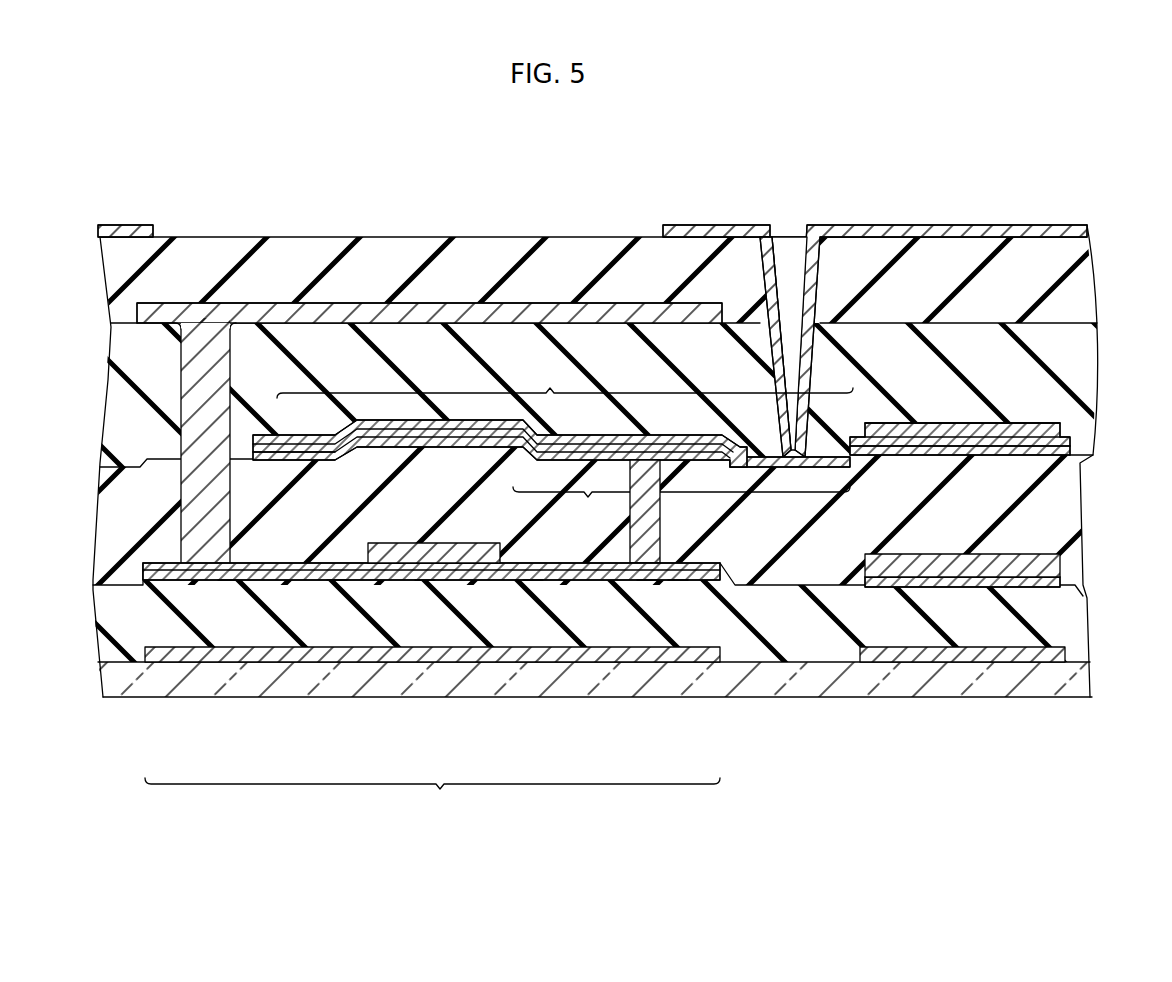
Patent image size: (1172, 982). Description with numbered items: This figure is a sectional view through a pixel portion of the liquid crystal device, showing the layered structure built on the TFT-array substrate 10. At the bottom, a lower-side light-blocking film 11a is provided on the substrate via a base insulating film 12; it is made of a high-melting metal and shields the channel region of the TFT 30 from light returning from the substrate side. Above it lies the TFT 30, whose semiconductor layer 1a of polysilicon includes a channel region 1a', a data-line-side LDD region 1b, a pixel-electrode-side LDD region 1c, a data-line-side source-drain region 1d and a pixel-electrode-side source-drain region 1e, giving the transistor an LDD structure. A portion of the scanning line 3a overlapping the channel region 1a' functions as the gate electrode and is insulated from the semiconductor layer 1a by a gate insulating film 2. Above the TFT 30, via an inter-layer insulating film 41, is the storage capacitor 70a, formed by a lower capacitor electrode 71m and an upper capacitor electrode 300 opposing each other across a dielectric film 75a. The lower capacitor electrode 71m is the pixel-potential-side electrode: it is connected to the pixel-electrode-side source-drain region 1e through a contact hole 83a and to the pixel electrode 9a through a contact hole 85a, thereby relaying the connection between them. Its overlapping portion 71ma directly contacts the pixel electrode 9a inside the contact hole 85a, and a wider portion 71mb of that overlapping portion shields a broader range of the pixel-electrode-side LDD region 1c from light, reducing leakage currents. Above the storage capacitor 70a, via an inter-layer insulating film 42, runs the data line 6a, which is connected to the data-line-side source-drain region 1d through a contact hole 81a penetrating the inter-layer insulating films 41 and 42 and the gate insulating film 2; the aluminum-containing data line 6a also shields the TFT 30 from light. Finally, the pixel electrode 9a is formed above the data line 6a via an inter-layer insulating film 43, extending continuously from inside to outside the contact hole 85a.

The pixel electrode 9a is at (138, 226).
The data line 6a is at (372, 312).
The contact hole 85a is at (800, 255).
The inter-layer insulating film 43 is at (1083, 278).
The inter-layer insulating film 42 is at (1083, 378).
The inter-layer insulating film 41 is at (1078, 510).
The base insulating film 12 is at (1075, 622).
The TFT-array substrate 10 is at (1075, 690).
The contact hole 81a is at (192, 396).
The overlapping portion 71ma is at (565, 378).
The storage capacitor 70a is at (694, 478).
The upper capacitor electrode 300 is at (920, 428).
The dielectric film 75a is at (265, 462).
The lower capacitor electrode 71m is at (928, 447).
The wider portion 71mb is at (681, 510).
The contact hole 83a is at (660, 538).
The gate insulating film 2 is at (283, 563).
The scanning line 3a is at (462, 545).
The lower-side light-blocking film 11a is at (182, 648).
The semiconductor layer 1a is at (684, 608).
The channel region 1a' is at (440, 674).
The data-line-side LDD region 1b is at (337, 583).
The pixel-electrode-side LDD region 1c is at (533, 583).
The data-line-side source-drain region 1d is at (228, 585).
The pixel-electrode-side source-drain region 1e is at (647, 583).
The TFT 30 is at (432, 799).